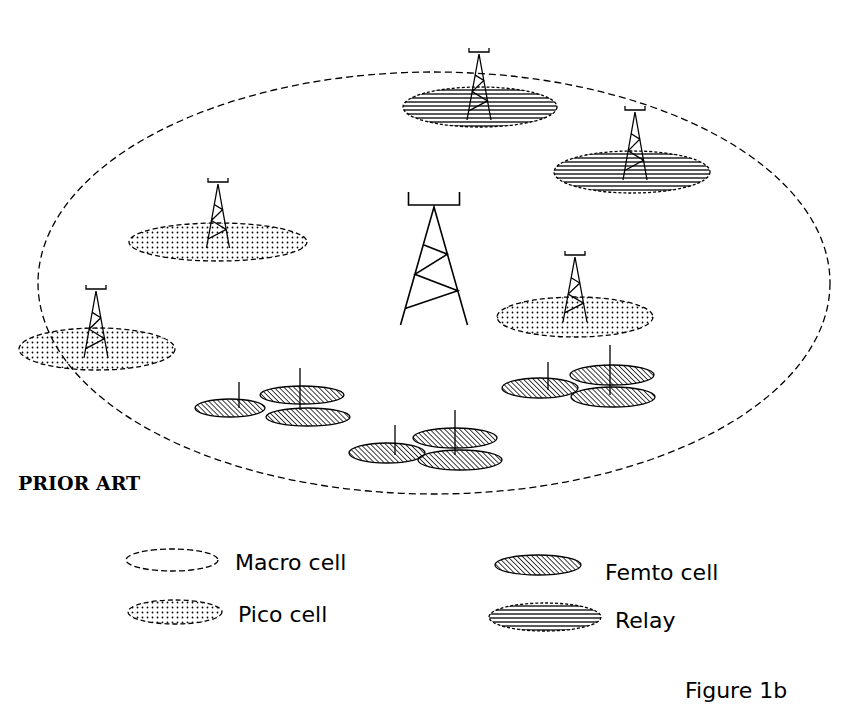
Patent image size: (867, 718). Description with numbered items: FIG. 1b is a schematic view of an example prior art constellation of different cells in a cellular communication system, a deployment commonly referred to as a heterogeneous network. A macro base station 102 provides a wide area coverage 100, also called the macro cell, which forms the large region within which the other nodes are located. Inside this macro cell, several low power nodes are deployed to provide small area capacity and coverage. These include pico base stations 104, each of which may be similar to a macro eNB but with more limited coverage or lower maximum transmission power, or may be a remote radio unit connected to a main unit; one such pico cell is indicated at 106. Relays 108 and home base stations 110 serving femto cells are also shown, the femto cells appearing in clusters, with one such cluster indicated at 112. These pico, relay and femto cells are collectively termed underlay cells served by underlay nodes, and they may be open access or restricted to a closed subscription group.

The wide area coverage 100 is at (236, 101).
The macro base station 102 is at (398, 287).
The pico base station 104 is at (226, 210).
The pico cell 106 is at (168, 259).
The relay 108 is at (648, 130).
The home base station 110 is at (640, 193).
The femto cell 112 is at (655, 385).